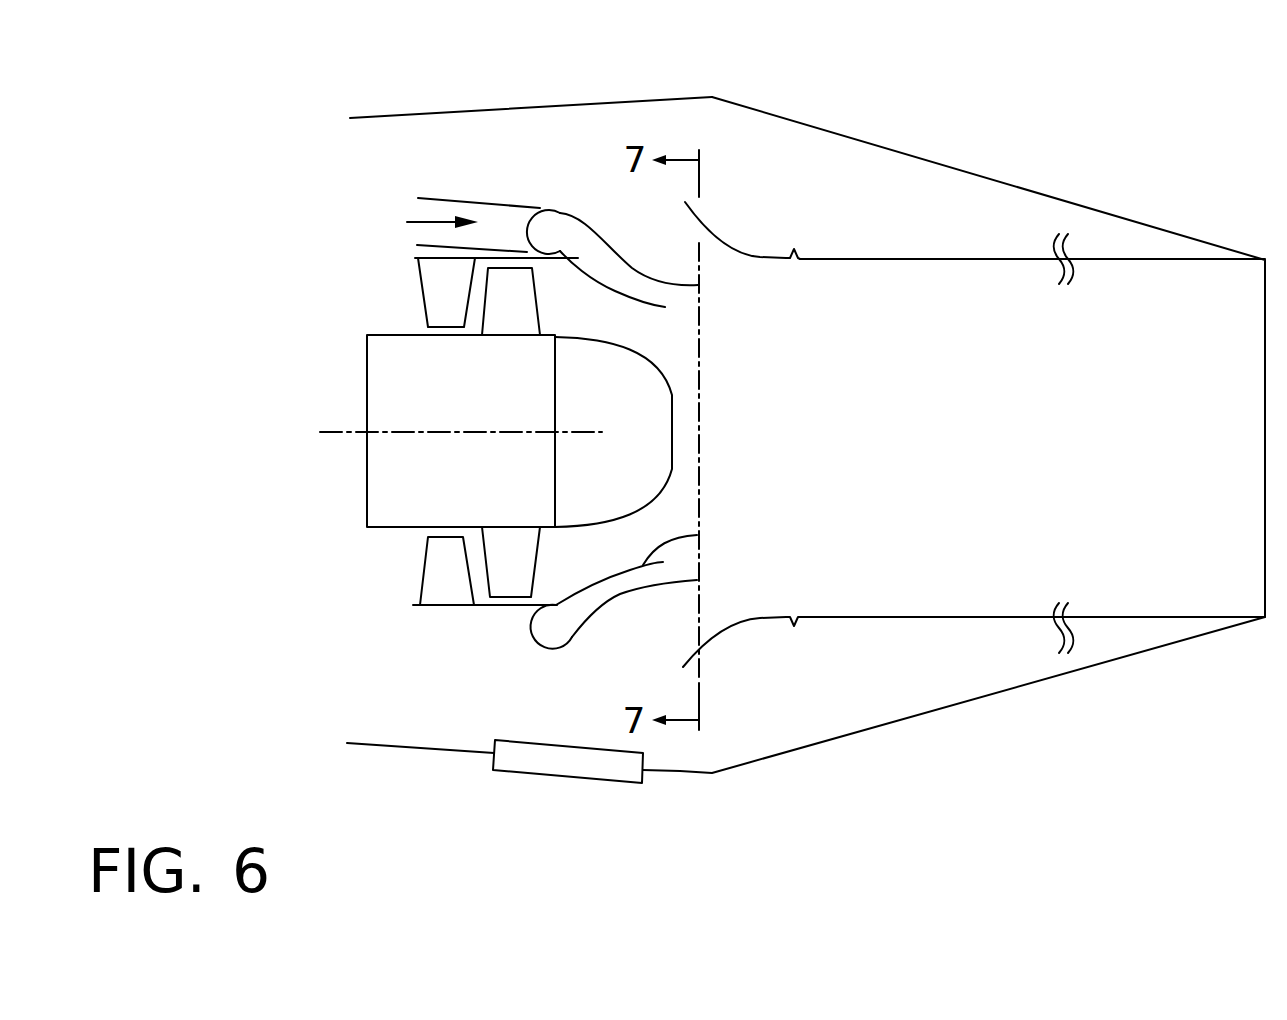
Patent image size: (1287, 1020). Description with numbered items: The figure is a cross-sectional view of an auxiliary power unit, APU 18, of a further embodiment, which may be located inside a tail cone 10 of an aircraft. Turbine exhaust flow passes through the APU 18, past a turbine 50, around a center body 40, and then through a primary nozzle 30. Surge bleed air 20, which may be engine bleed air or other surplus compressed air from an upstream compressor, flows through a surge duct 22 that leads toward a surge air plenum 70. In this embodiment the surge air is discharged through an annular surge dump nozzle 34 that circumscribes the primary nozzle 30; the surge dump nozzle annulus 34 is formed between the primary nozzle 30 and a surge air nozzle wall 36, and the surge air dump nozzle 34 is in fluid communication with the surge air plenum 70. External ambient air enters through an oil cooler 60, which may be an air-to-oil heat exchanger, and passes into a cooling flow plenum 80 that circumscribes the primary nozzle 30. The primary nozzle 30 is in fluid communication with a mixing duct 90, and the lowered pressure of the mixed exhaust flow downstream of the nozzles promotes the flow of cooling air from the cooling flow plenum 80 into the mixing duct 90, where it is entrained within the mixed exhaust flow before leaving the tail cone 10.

The tail cone 10 is at (938, 116).
The APU 18 is at (699, 392).
The surge bleed air 20 is at (422, 223).
The surge duct 22 is at (463, 197).
The primary nozzle 30 is at (675, 278).
The annular surge dump nozzle 34 is at (670, 295).
The surge air nozzle wall 36 is at (697, 535).
The center body 40 is at (587, 406).
The turbine 50 is at (507, 562).
The oil cooler 60 is at (510, 772).
The surge air plenum 70 is at (564, 235).
The cooling flow plenum 80 is at (550, 118).
The mixing duct 90 is at (910, 620).